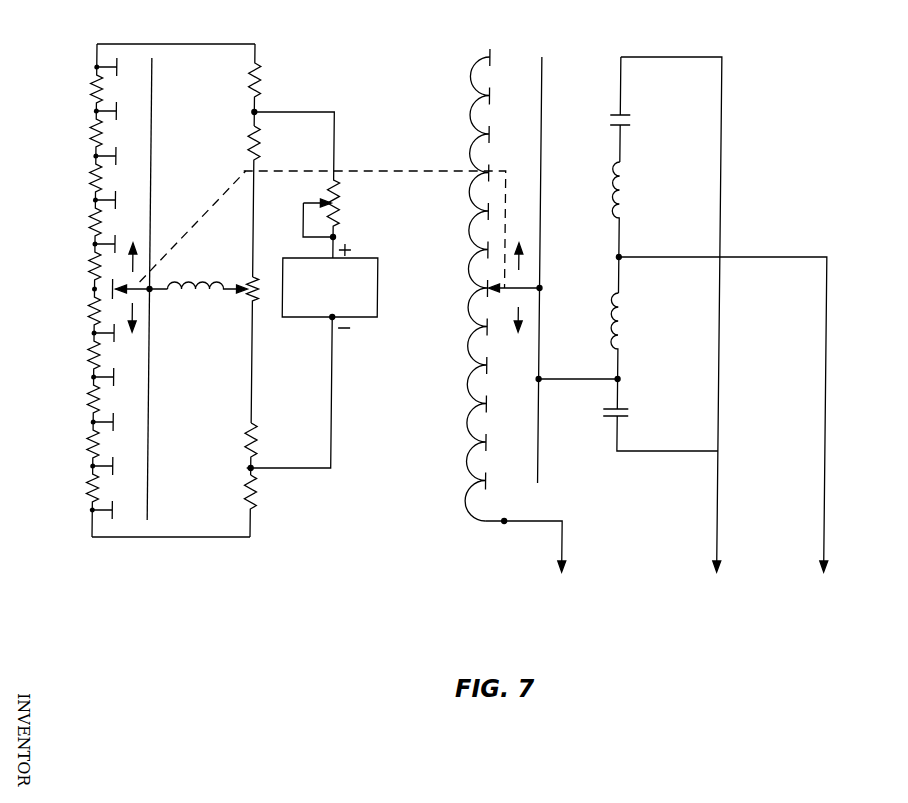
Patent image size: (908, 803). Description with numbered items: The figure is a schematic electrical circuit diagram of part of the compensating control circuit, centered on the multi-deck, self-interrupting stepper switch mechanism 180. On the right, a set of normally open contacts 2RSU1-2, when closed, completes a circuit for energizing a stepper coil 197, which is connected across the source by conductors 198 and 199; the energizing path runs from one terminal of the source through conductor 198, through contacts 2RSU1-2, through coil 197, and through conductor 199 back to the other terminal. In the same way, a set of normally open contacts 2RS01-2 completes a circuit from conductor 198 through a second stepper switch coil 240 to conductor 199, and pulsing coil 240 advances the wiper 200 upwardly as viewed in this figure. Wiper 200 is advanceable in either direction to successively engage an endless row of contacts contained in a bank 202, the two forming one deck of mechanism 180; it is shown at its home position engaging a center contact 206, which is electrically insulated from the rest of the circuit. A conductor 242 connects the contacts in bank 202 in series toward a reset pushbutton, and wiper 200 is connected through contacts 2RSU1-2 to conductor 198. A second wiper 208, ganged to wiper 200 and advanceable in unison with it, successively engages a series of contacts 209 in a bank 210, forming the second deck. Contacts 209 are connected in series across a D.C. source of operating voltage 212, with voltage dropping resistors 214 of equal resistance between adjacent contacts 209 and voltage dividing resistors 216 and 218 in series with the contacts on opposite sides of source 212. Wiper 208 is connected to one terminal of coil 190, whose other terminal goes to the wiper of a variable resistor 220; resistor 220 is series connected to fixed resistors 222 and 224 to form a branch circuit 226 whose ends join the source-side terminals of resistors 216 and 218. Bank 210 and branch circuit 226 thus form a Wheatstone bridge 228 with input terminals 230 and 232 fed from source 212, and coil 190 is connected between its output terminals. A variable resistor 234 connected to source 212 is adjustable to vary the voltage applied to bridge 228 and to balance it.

The stepper switch mechanism 180 is at (459, 592).
The coil 190 is at (190, 276).
The stepper coil 197 is at (620, 343).
The conductor 198 is at (723, 493).
The conductor 199 is at (830, 462).
The wiper 200 is at (520, 288).
The bank 202 is at (470, 398).
The center contact 206 is at (487, 284).
The second wiper 208 is at (151, 290).
The contacts 209 is at (149, 276).
The bank 210 is at (84, 249).
The D.C. source of operating voltage 212 is at (370, 318).
The voltage dropping resistors 214 is at (91, 91).
The voltage dividing resistor 216 is at (259, 77).
The voltage dividing resistor 218 is at (259, 512).
The variable resistor 220 is at (258, 300).
The fixed resistor 222 is at (260, 152).
The fixed resistor 224 is at (259, 456).
The branch circuit 226 is at (261, 396).
The Wheatstone bridge 228 is at (196, 545).
The input terminal 230 is at (256, 112).
The input terminal 232 is at (257, 469).
The variable resistor 234 is at (340, 212).
The second stepper switch coil 240 is at (620, 190).
The conductor 242 is at (568, 541).
The normally open contacts 2RS01-2 is at (624, 127).
The normally open contacts 2RSU1-2 is at (623, 418).